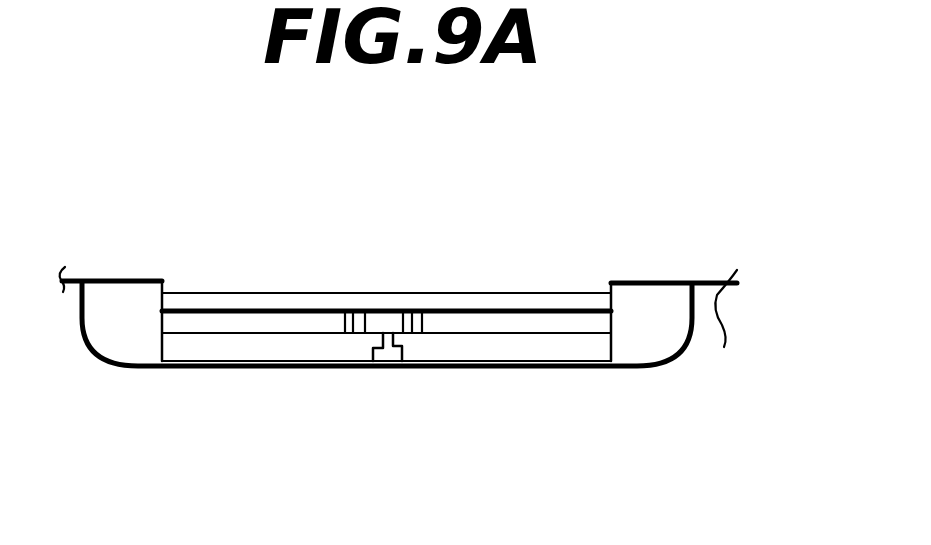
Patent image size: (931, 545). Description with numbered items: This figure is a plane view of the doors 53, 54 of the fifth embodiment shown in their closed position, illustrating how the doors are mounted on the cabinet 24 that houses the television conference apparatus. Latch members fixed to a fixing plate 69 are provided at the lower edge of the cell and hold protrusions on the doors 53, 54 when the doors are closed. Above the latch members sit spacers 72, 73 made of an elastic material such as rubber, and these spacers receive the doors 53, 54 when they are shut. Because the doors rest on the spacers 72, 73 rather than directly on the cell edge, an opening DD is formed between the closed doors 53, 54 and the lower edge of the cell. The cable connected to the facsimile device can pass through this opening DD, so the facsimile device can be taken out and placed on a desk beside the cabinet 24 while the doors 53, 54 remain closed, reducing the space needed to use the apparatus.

The cabinet 24 is at (717, 337).
The door 53 is at (575, 367).
The door 54 is at (275, 362).
The fixing plate 69 is at (422, 323).
The spacer 72 is at (392, 333).
The spacer 73 is at (338, 312).
The opening DD is at (224, 316).